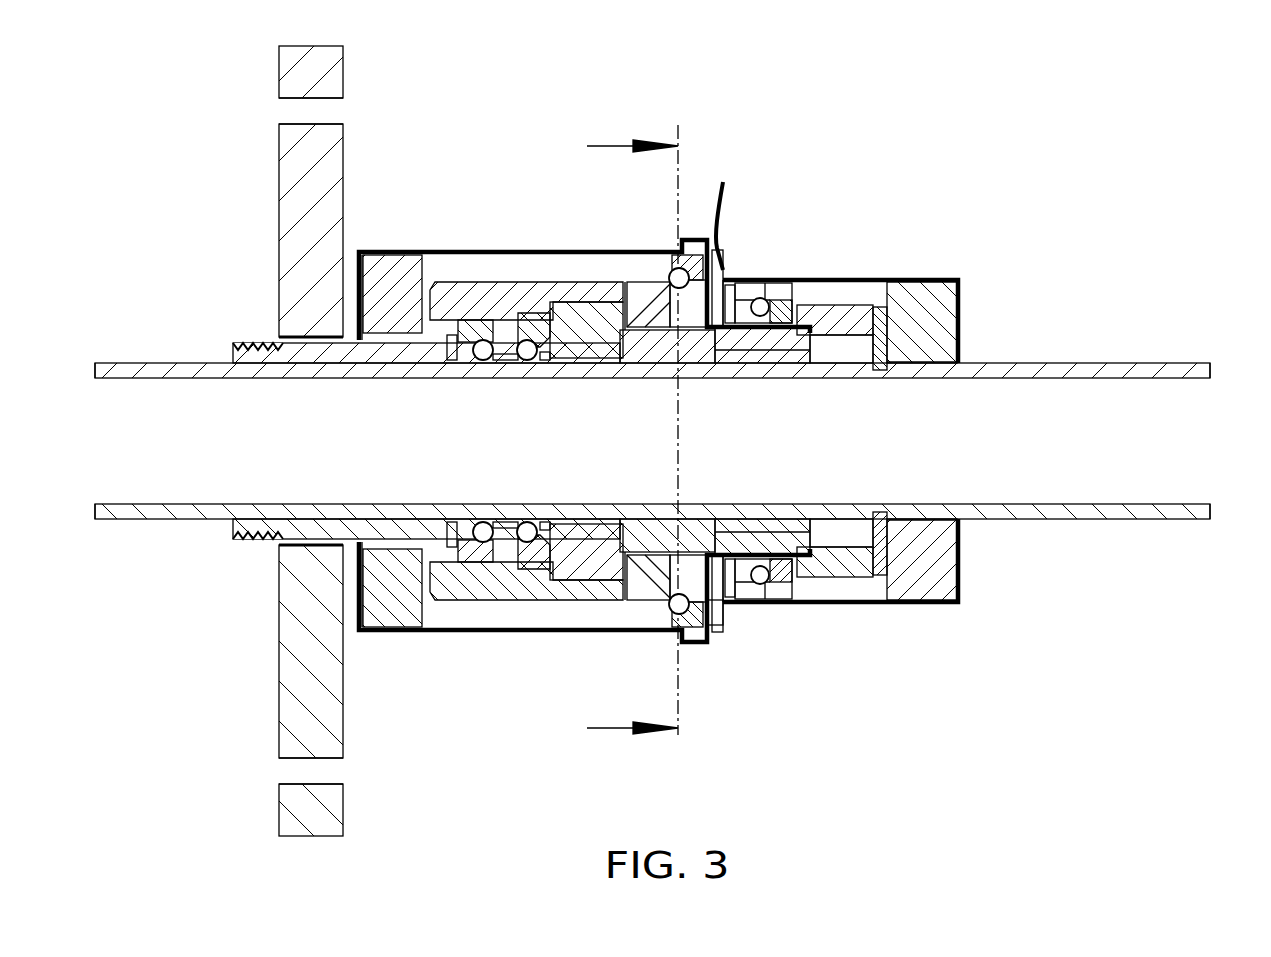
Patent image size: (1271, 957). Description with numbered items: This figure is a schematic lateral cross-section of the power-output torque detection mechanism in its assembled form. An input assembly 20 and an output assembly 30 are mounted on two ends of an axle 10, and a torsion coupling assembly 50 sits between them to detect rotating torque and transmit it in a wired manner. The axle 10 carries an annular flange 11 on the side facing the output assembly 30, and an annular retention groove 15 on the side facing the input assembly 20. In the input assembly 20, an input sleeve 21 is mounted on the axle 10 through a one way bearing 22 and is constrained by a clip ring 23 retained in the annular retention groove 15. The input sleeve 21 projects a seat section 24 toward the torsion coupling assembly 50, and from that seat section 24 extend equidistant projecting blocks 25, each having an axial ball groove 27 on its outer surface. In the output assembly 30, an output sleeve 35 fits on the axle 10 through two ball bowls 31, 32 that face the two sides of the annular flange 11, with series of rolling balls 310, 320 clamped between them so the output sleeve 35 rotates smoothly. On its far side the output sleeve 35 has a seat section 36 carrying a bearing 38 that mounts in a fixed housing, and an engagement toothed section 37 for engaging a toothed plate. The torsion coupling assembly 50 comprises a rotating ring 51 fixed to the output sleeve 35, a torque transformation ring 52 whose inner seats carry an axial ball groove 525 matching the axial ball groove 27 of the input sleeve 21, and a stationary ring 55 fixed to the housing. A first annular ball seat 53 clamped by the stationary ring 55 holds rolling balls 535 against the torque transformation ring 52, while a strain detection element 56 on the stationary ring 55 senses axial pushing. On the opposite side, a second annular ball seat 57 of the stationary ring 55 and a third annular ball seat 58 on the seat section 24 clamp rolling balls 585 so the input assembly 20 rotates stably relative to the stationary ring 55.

The axle 10 is at (1030, 370).
The annular flange 11 is at (481, 545).
The annular retention groove 15 is at (907, 385).
The input assembly 20 is at (845, 208).
The input sleeve 21 is at (840, 320).
The one way bearing 22 is at (805, 335).
The clip ring 23 is at (905, 320).
The seat section 24 is at (783, 350).
The projecting blocks 25 is at (646, 300).
The axial ball groove 27 is at (620, 322).
The output assembly 30 is at (482, 243).
The ball bowl 31 is at (430, 562).
The rolling balls 310 is at (458, 548).
The ball bowl 32 is at (527, 548).
The rolling balls 320 is at (507, 545).
The output sleeve 35 is at (520, 290).
The seat section 36 is at (385, 332).
The engagement toothed section 37 is at (308, 335).
The bearing 38 is at (400, 265).
The torsion coupling assembly 50 is at (593, 278).
The rotating ring 51 is at (548, 318).
The torque transformation ring 52 is at (635, 552).
The axial ball groove 525 is at (550, 566).
The first annular ball seat 53 is at (690, 628).
The rolling balls 535 is at (680, 606).
The stationary ring 55 is at (725, 270).
The strain detection element 56 is at (686, 268).
The second annular ball seat 57 is at (745, 600).
The third annular ball seat 58 is at (795, 583).
The rolling balls 585 is at (763, 590).